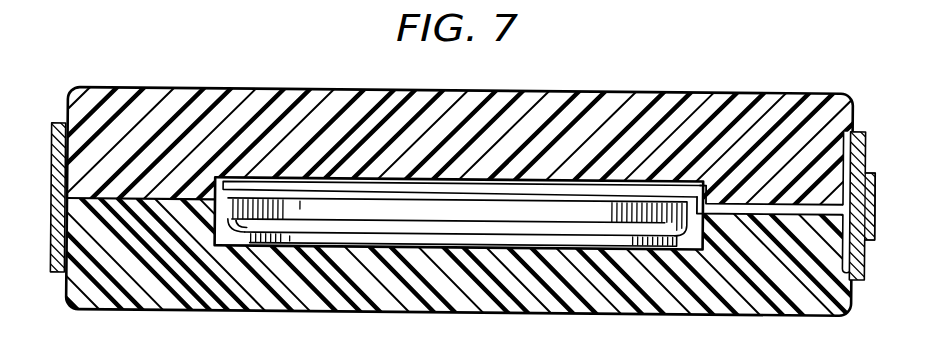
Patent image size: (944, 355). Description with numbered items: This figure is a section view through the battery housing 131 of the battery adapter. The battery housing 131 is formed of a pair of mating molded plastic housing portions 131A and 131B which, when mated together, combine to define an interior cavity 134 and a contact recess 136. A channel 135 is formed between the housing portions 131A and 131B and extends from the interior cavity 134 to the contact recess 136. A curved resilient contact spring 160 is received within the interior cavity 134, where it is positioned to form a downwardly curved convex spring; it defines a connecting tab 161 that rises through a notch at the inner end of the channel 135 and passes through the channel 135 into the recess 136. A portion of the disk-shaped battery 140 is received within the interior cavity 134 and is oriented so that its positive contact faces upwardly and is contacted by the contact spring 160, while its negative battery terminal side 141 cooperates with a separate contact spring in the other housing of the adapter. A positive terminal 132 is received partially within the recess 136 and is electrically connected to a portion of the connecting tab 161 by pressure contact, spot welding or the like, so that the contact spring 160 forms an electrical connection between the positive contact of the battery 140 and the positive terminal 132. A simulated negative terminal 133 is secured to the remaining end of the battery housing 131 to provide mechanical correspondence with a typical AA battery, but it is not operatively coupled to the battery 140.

The battery housing 131 is at (818, 90).
The housing portion 131A is at (765, 113).
The housing portion 131B is at (589, 309).
The positive terminal 132 is at (876, 241).
The simulated negative terminal 133 is at (51, 145).
The interior cavity 134 is at (222, 230).
The channel 135 is at (733, 193).
The contact recess 136 is at (860, 132).
The disk-shaped battery 140 is at (353, 208).
The negative battery terminal side 141 is at (450, 240).
The contact spring 160 is at (486, 195).
The connecting tab 161 is at (795, 218).